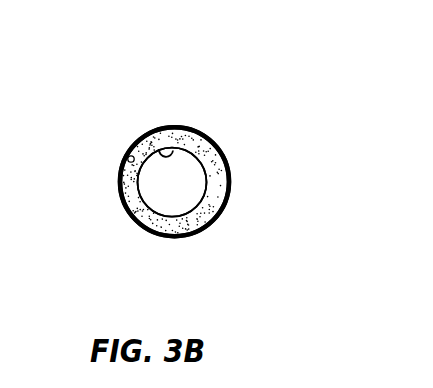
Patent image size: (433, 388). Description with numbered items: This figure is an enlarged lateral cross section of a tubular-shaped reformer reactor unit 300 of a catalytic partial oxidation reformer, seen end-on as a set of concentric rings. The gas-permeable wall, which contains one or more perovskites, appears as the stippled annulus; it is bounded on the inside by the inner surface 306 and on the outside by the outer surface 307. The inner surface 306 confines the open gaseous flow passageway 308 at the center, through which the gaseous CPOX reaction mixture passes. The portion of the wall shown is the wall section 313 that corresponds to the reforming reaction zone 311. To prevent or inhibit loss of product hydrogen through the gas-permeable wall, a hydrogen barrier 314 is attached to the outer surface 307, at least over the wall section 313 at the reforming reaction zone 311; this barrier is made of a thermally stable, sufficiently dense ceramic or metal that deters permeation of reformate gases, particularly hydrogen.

The reformer reactor unit 300 is at (204, 79).
The inner surface 306 is at (171, 153).
The outer surface 307 is at (121, 166).
The open gaseous flow passageway 308 is at (173, 203).
The reforming reaction zone 311 is at (189, 176).
The wall section 313 is at (142, 217).
The hydrogen barrier 314 is at (228, 202).